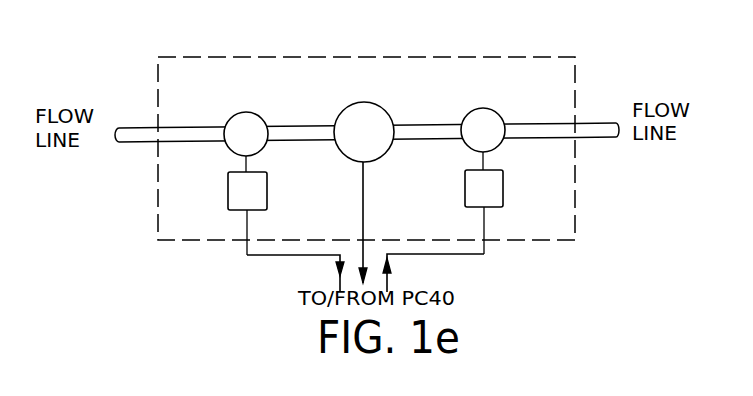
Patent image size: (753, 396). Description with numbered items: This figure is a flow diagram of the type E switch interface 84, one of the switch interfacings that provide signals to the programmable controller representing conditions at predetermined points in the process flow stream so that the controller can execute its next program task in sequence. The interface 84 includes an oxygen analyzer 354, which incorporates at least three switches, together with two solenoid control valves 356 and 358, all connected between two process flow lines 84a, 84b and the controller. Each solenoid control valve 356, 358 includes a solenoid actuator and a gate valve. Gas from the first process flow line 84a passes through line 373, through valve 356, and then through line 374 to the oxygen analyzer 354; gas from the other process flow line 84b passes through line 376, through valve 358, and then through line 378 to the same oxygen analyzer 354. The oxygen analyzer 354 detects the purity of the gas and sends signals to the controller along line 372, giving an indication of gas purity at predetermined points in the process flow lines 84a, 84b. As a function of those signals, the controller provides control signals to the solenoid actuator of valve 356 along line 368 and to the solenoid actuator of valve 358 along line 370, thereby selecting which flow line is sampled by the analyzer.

The type E switch interface 84 is at (370, 57).
The process flow line 84a is at (145, 142).
The process flow line 84b is at (591, 137).
The oxygen analyzer 354 is at (366, 102).
The solenoid control valve 356 is at (258, 100).
The solenoid control valve 358 is at (480, 108).
The line 368 is at (244, 218).
The line 370 is at (487, 226).
The line 372 is at (363, 193).
The line 373 is at (192, 133).
The line 374 is at (299, 130).
The line 376 is at (533, 126).
The line 378 is at (425, 128).